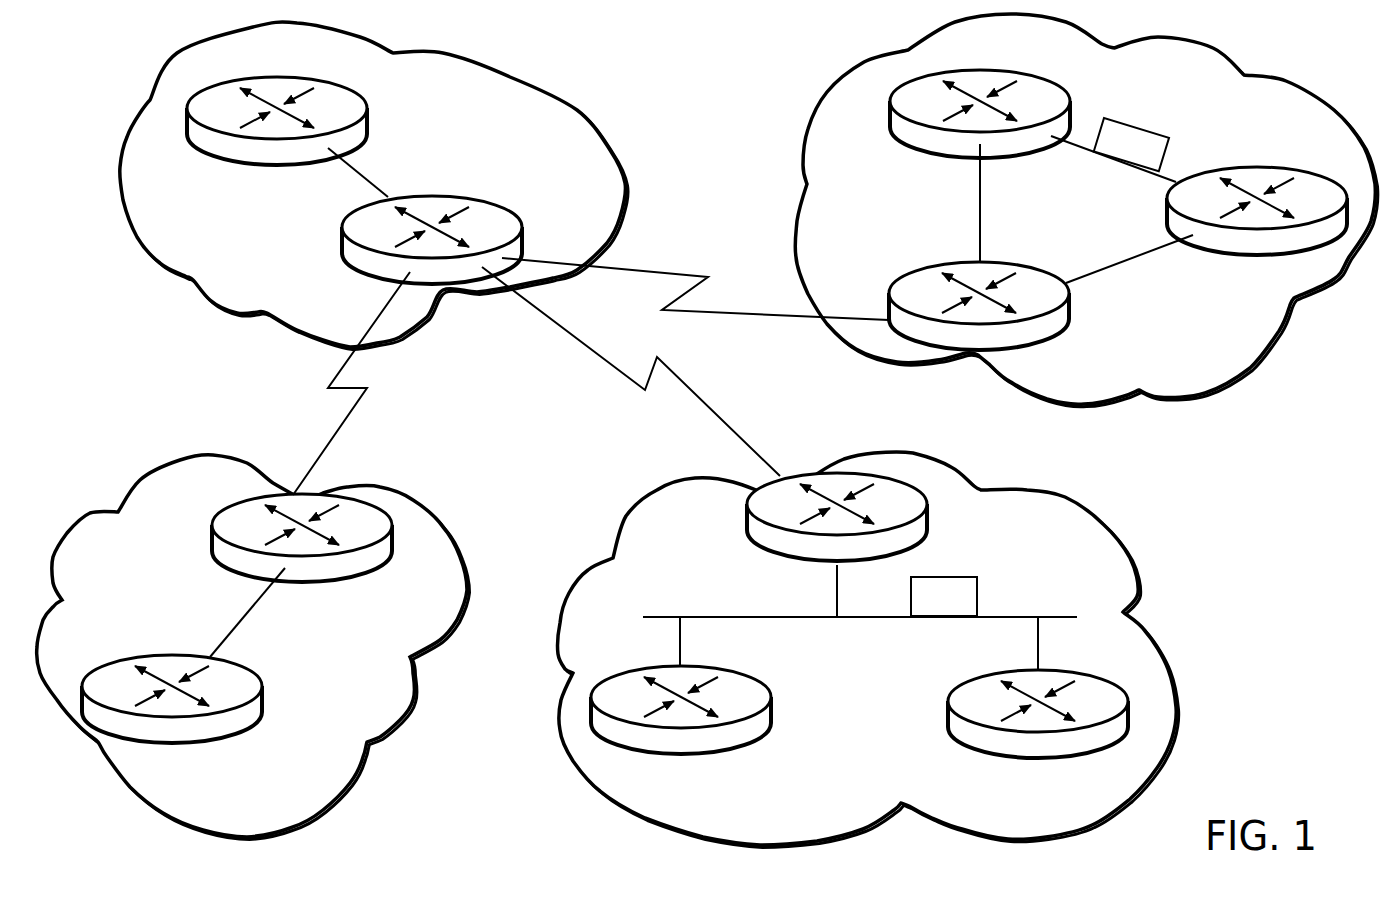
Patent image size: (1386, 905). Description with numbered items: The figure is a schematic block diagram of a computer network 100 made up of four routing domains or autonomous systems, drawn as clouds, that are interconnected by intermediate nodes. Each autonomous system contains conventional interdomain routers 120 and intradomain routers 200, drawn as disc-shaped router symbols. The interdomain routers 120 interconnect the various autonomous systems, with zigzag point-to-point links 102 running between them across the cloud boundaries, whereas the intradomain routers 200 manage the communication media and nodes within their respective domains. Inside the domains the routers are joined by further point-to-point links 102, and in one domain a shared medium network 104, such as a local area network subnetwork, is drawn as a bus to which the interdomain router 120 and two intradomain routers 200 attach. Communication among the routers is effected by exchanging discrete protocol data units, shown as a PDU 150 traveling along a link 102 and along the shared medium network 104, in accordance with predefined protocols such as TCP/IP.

The computer network 100 is at (108, 92).
The point-to-point links 102 is at (368, 177).
The shared medium networks 104 is at (863, 619).
The interdomain routers 120 is at (502, 210).
The protocol data unit (PDU) 150 is at (1158, 128).
The intradomain routers 200 is at (276, 78).